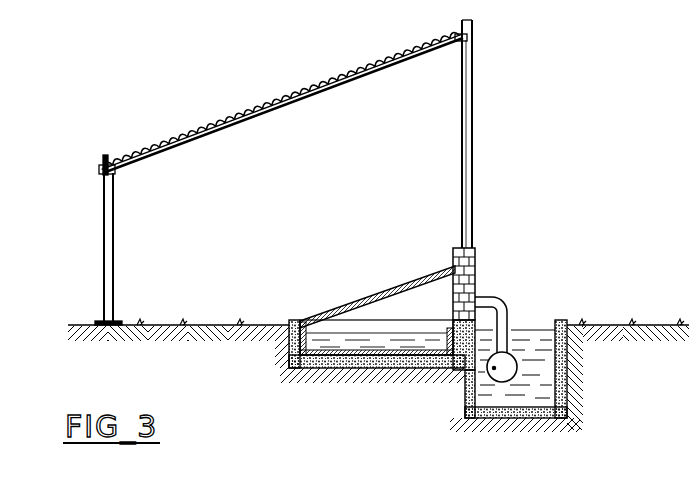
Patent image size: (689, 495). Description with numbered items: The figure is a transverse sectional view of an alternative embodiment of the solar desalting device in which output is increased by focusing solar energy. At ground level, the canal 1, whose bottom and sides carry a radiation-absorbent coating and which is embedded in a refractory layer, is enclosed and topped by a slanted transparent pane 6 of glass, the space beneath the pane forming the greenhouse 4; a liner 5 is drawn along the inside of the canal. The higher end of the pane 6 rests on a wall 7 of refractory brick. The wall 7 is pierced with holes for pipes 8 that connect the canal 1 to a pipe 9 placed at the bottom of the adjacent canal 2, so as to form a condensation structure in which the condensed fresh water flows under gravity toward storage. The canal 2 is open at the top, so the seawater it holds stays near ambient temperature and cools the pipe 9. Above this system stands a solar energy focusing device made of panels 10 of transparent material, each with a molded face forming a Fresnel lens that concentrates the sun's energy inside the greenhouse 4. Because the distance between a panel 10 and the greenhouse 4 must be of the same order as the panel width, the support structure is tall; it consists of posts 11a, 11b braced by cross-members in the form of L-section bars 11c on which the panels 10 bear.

The canal 1 is at (365, 346).
The canal 2 is at (534, 397).
The greenhouse 4 is at (431, 316).
The pool liner 5 is at (290, 352).
The transparent pane 6 is at (380, 292).
The wall 7 is at (478, 270).
The pipes 8 is at (504, 300).
The pipe 9 is at (502, 367).
The panels 10 is at (283, 106).
The post 11a is at (470, 153).
The post 11b is at (104, 249).
The L-section bars 11c is at (100, 167).